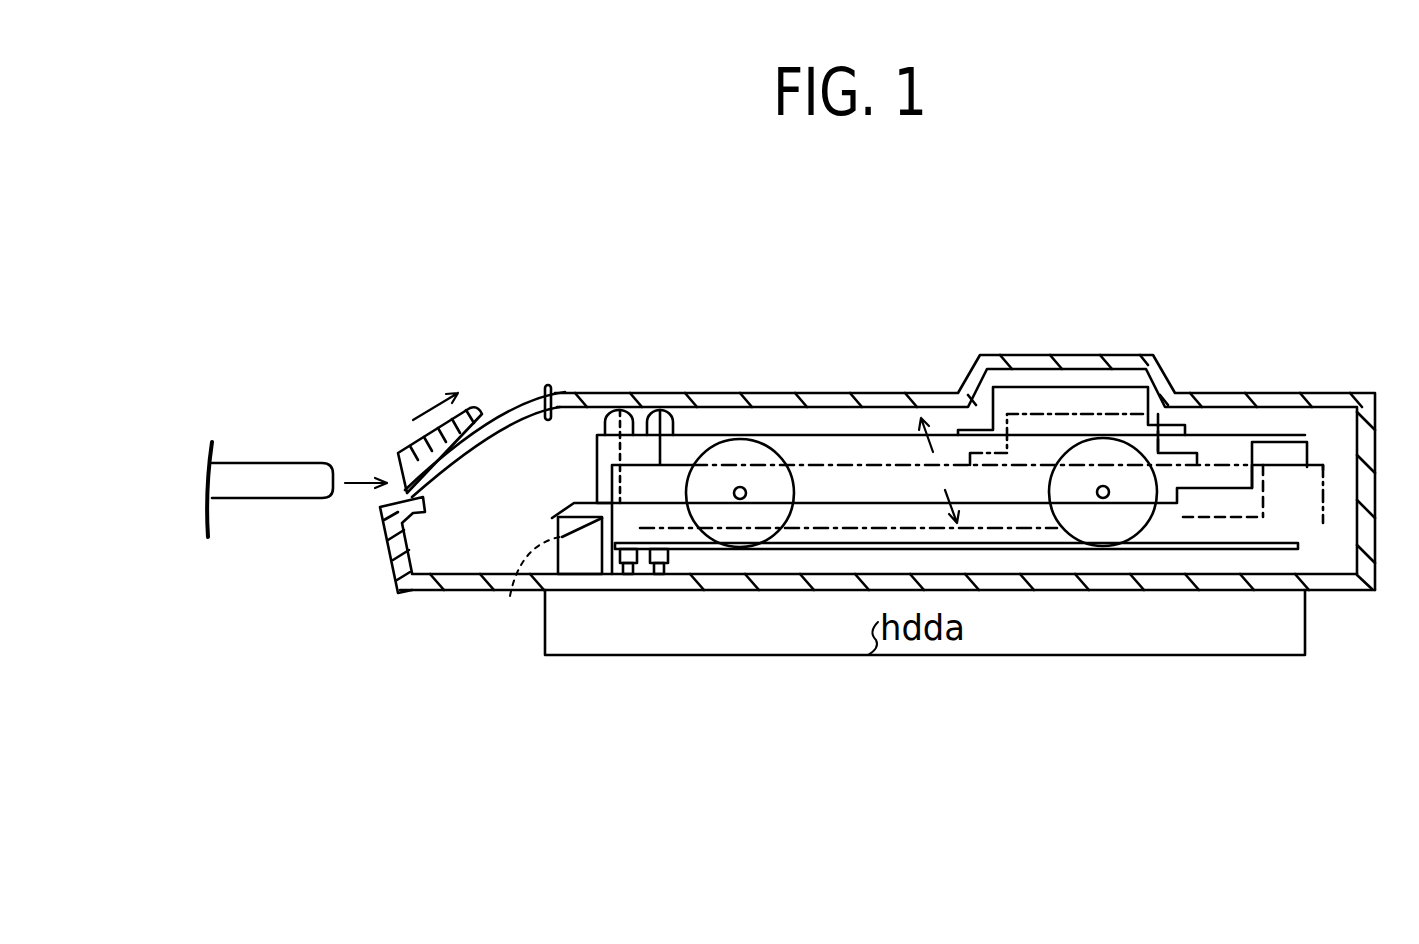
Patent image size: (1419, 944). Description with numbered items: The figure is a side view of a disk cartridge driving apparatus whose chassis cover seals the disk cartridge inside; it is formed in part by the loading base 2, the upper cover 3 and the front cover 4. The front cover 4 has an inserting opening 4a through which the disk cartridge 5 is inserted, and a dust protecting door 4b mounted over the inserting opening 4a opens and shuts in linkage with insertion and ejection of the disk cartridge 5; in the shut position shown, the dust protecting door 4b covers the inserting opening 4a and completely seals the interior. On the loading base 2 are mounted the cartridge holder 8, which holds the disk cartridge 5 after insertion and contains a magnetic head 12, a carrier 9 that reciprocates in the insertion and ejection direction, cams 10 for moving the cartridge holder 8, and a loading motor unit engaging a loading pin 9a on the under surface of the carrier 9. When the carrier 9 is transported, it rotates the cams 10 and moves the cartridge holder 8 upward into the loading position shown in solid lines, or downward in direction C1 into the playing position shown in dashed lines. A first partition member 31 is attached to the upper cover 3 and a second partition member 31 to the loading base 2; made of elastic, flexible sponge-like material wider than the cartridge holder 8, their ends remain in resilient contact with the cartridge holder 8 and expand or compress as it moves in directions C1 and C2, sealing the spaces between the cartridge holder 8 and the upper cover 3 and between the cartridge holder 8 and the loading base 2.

The loading base 2 is at (1363, 590).
The upper cover 3 is at (1280, 392).
The front cover 4 is at (407, 592).
The inserting opening 4a is at (460, 460).
The dust protecting door 4b is at (400, 453).
The disk cartridge 5 is at (275, 507).
The cartridge holder 8 is at (840, 533).
The carrier 9 is at (650, 575).
The loading pin 9a is at (628, 575).
The cam 10 is at (740, 448).
The magnetic head 12 is at (1023, 387).
The partition member 31 is at (630, 410).
The direction C1 is at (966, 497).
The direction C2 is at (908, 442).